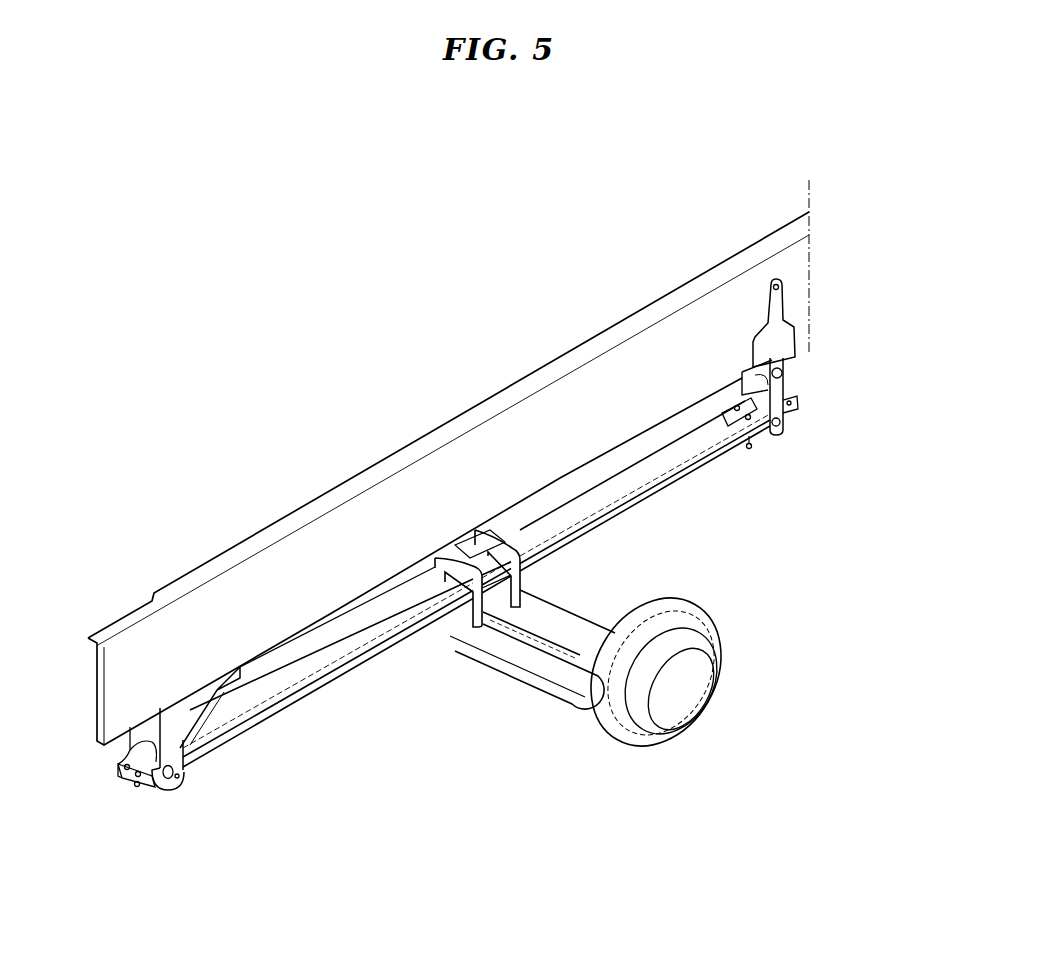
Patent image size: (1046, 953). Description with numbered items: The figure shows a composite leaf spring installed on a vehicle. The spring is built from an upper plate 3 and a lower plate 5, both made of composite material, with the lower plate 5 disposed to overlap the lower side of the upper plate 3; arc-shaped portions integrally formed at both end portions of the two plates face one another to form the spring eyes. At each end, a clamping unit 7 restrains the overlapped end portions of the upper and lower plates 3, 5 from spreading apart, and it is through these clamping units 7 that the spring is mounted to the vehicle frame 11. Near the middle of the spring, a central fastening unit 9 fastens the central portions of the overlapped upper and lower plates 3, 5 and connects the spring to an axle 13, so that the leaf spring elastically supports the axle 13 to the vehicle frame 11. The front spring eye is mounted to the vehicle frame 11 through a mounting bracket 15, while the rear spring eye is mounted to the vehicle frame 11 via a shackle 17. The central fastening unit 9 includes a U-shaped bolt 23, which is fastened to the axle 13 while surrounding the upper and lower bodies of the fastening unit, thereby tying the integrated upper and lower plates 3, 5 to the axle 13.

The upper plate 3 is at (262, 697).
The lower plate 5 is at (330, 688).
The clamping unit 7 is at (800, 426).
The central fastening unit 9 is at (450, 533).
The vehicle frame 11 is at (540, 427).
The axle 13 is at (548, 703).
The mounting bracket 15 is at (183, 720).
The shackle 17 is at (779, 388).
The U-shaped bolt 23 is at (474, 628).